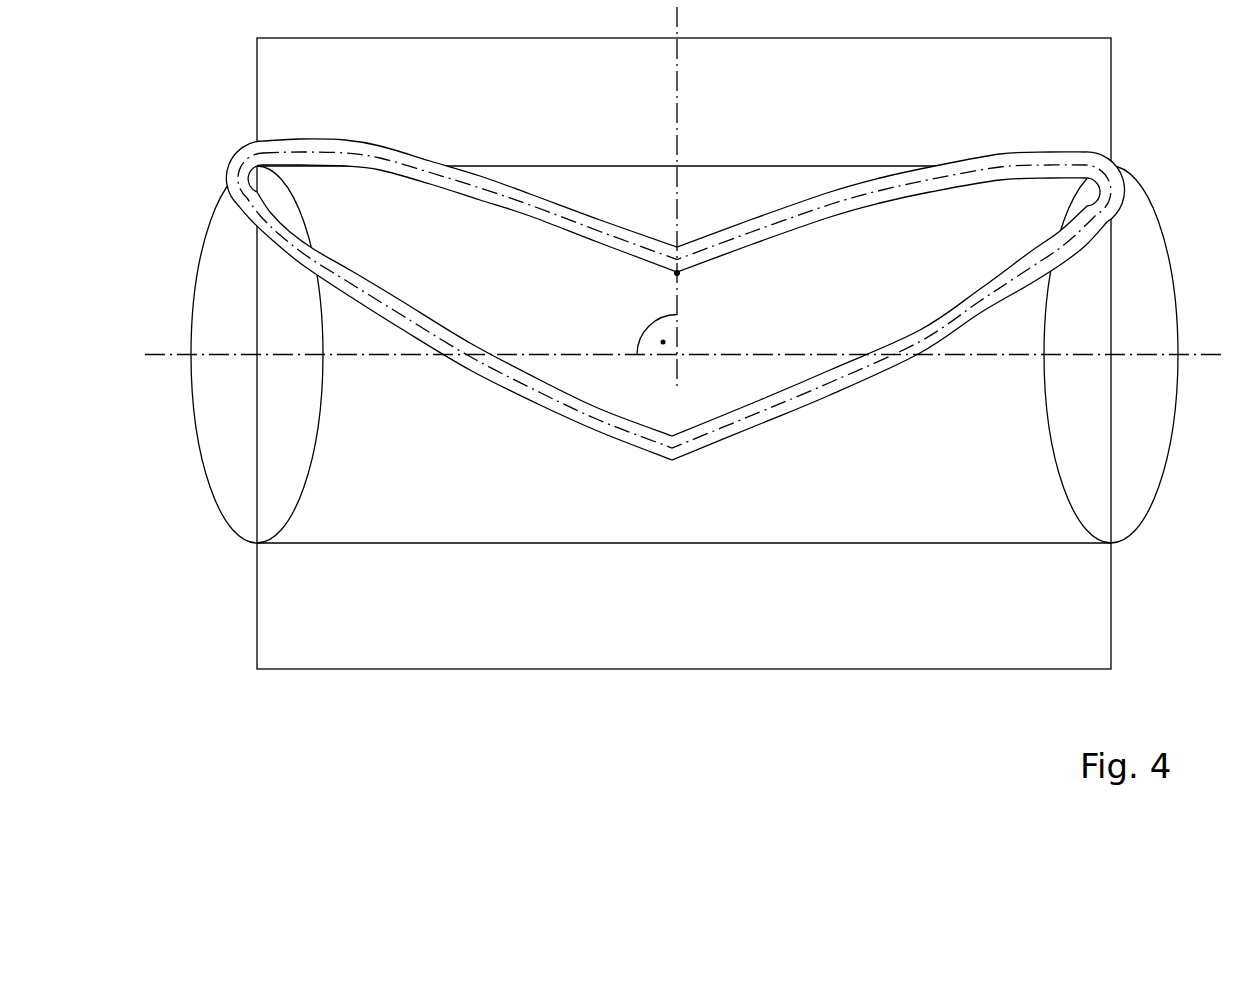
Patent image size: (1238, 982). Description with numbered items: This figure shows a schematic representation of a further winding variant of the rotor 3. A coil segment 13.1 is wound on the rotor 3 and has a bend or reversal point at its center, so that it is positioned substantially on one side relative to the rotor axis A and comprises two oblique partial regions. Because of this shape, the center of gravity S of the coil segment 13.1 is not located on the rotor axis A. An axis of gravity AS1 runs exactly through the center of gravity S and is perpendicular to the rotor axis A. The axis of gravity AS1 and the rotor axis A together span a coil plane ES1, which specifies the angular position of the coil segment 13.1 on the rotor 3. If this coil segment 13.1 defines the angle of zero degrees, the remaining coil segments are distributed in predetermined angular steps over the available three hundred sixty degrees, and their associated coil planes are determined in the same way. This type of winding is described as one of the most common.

The coil segment 13.1 is at (947, 172).
The rotor 3 is at (690, 578).
The center of gravity S is at (680, 275).
The rotor axis A is at (1203, 354).
The axis of gravity AS1 is at (677, 106).
The coil plane ES1 is at (518, 645).